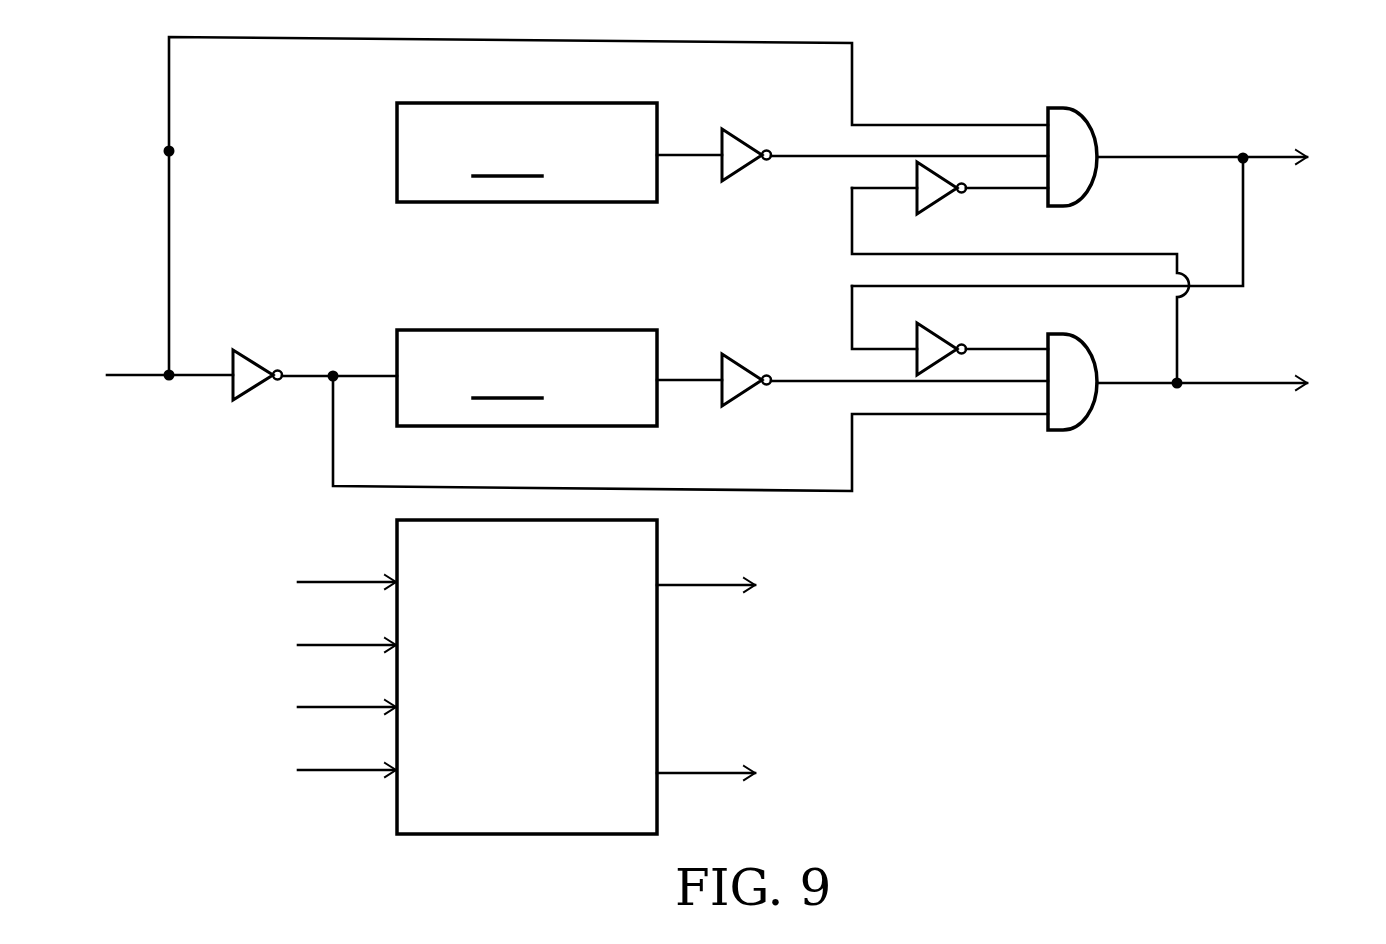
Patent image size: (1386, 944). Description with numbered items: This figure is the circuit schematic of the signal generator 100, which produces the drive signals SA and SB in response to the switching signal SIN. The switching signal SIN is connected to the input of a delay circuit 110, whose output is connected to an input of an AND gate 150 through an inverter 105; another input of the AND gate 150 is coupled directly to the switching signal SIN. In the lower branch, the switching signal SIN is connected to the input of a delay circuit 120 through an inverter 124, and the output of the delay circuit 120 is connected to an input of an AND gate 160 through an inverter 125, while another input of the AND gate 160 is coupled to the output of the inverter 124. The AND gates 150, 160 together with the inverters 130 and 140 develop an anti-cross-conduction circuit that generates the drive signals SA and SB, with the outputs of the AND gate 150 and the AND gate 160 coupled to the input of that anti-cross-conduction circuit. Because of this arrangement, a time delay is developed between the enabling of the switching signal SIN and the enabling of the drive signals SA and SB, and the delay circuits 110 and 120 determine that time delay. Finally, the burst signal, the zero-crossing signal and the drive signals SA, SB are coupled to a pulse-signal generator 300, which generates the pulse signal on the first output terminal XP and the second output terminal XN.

The signal generator 100 is at (1269, 77).
The inverter 105 is at (742, 140).
The delay circuit 110 is at (527, 103).
The delay circuit 120 is at (527, 330).
The inverter 124 is at (255, 362).
The inverter 125 is at (742, 365).
The inverter 130 is at (935, 203).
The inverter 140 is at (935, 335).
The AND gate 150 is at (1063, 108).
The AND gate 160 is at (1065, 430).
The pulse-signal generator 300 is at (657, 538).